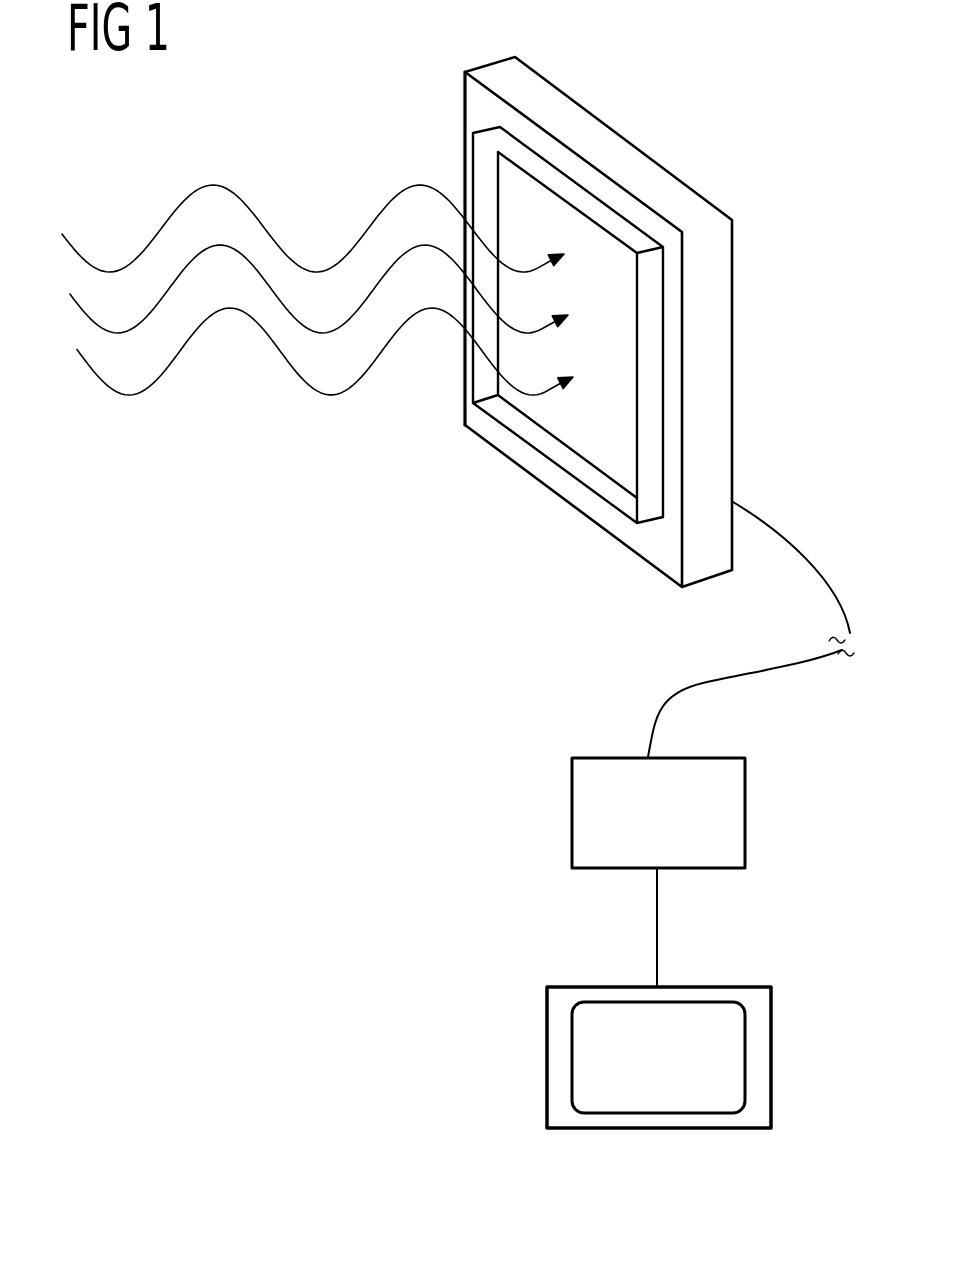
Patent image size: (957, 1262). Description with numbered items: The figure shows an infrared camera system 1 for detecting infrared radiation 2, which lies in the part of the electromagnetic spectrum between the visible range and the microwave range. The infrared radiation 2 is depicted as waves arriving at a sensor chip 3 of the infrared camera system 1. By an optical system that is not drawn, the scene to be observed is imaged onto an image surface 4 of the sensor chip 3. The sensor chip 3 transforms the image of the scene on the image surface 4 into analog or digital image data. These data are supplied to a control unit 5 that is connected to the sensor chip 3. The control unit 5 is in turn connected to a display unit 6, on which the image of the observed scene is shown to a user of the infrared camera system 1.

The infrared camera system 1 is at (680, 86).
The infrared radiation 2 is at (217, 182).
The sensor chip 3 is at (722, 350).
The image surface 4 is at (562, 430).
The control unit 5 is at (745, 815).
The display unit 6 is at (771, 1058).